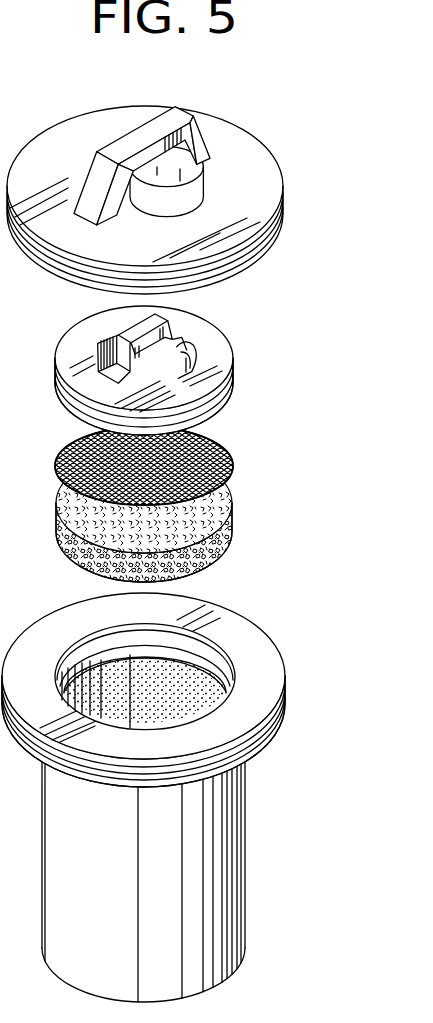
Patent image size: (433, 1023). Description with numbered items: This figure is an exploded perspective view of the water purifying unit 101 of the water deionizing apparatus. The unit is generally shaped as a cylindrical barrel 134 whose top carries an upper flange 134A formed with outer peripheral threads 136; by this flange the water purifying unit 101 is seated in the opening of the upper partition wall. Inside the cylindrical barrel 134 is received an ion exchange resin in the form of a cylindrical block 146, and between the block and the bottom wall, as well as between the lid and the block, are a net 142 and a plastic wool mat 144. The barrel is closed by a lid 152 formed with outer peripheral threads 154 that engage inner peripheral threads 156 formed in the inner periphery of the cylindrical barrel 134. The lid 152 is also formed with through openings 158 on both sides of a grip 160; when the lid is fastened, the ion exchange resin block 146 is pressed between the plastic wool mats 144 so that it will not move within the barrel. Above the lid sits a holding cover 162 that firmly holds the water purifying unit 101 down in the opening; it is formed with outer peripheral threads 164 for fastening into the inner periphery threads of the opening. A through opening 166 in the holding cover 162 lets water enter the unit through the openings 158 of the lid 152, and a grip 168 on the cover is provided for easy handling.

The water purifying unit 101 is at (125, 77).
The holding cover 162 is at (257, 150).
The outer peripheral threads 164 is at (277, 233).
The through opening 166 is at (180, 173).
The grip 168 is at (173, 120).
The lid 152 is at (210, 343).
The outer peripheral threads 154 is at (230, 403).
The through openings 158 is at (200, 368).
The grip 160 is at (140, 323).
The net 142 is at (233, 455).
The plastic wool mat 144 is at (233, 513).
The cylindrical barrel 134 is at (233, 842).
The upper flange 134A is at (263, 650).
The outer peripheral threads 136 is at (267, 743).
The inner peripheral threads 156 is at (205, 642).
The ion exchange resin block 146 is at (98, 682).